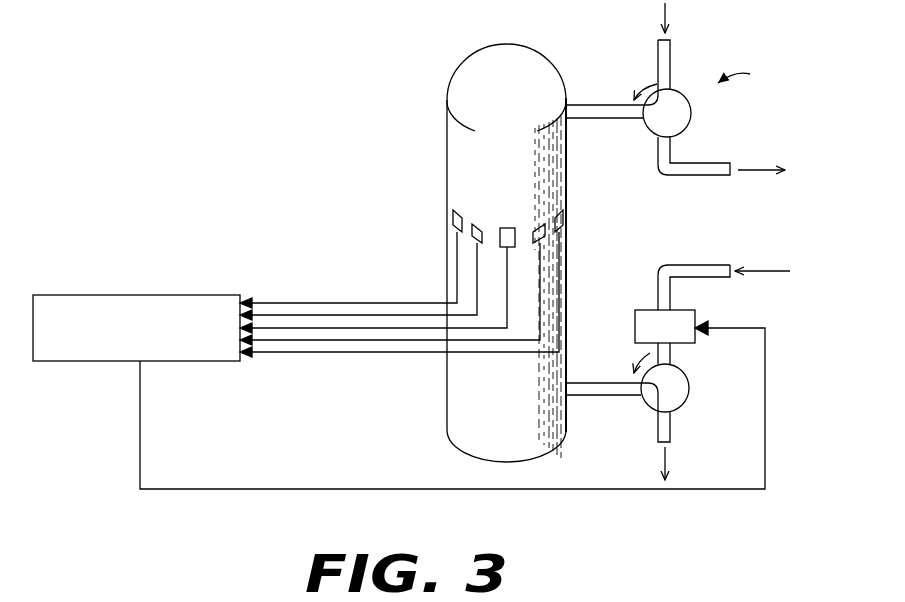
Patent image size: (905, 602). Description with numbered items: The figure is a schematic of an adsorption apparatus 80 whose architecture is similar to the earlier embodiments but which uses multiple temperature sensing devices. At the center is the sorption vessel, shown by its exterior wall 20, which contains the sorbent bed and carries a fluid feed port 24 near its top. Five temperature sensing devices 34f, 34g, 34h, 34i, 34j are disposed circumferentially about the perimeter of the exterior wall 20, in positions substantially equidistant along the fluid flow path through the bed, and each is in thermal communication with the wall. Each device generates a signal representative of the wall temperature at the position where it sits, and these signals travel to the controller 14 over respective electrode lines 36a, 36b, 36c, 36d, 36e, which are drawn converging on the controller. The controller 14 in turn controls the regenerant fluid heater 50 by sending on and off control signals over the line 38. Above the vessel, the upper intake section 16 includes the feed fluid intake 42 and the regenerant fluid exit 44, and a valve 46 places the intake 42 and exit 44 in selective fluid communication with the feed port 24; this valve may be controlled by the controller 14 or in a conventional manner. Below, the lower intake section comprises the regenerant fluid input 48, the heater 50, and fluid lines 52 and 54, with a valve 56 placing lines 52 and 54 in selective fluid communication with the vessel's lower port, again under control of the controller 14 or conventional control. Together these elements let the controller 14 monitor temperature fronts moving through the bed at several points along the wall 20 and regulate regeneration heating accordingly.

The controller 14 is at (127, 295).
The upper intake section 16 is at (746, 76).
The exterior wall 20 is at (568, 253).
The fluid feed port 24 is at (568, 106).
The temperature sensing device 34f is at (455, 219).
The temperature sensing device 34g is at (473, 235).
The temperature sensing device 34h is at (507, 228).
The temperature sensing device 34i is at (539, 223).
The temperature sensing device 34j is at (563, 222).
The electrode line 36a is at (268, 302).
The electrode line 36b is at (330, 314).
The electrode line 36c is at (392, 327).
The electrode line 36d is at (312, 341).
The electrode line 36e is at (385, 353).
The line 38 is at (279, 491).
The feed fluid intake 42 is at (666, 62).
The regenerant fluid exit 44 is at (684, 163).
The valve 46 is at (692, 112).
The regenerant fluid input 48 is at (709, 279).
The heater 50 is at (665, 337).
The fluid line 52 is at (673, 351).
The fluid line 54 is at (673, 428).
The valve 56 is at (690, 389).
The adsorption apparatus 80 is at (152, 513).